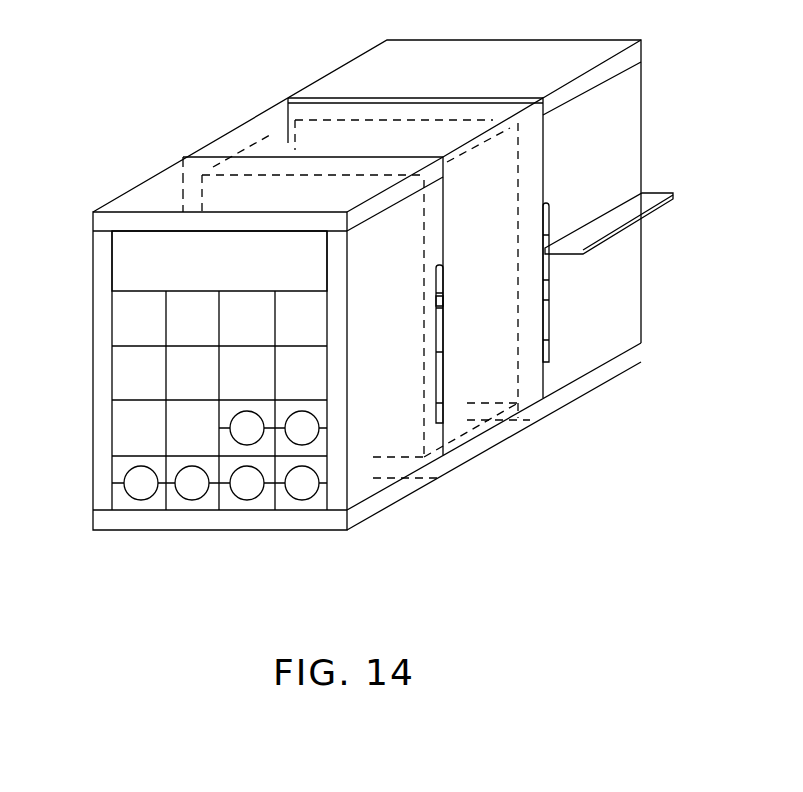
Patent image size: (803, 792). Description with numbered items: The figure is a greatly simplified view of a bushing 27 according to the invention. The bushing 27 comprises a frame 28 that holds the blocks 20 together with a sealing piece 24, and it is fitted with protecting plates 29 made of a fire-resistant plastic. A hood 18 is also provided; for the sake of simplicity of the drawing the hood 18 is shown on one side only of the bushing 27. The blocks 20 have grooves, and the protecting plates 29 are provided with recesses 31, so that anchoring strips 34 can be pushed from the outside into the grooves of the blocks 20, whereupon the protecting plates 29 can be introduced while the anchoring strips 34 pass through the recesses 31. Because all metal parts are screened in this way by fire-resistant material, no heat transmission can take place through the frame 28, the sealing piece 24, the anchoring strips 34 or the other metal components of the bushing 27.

The bushing 27 is at (242, 84).
The protecting plates 29 is at (100, 373).
The sealing piece 24 is at (132, 248).
The blocks 20 is at (232, 447).
The frame 28 is at (475, 445).
The hood 18 is at (620, 147).
The recesses 31 is at (437, 338).
The anchoring strips 34 is at (440, 305).